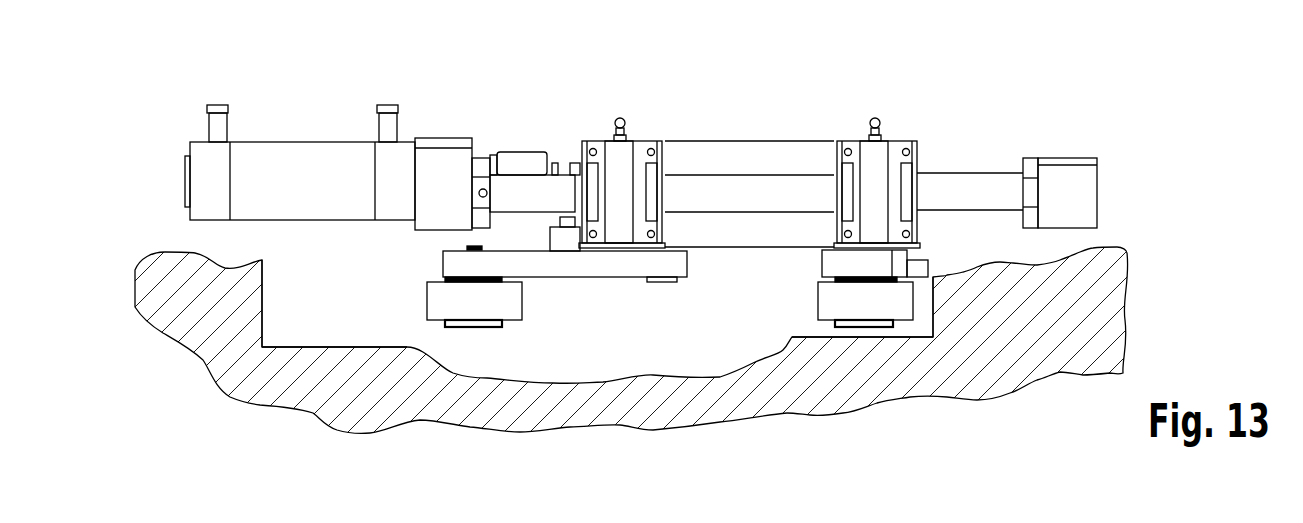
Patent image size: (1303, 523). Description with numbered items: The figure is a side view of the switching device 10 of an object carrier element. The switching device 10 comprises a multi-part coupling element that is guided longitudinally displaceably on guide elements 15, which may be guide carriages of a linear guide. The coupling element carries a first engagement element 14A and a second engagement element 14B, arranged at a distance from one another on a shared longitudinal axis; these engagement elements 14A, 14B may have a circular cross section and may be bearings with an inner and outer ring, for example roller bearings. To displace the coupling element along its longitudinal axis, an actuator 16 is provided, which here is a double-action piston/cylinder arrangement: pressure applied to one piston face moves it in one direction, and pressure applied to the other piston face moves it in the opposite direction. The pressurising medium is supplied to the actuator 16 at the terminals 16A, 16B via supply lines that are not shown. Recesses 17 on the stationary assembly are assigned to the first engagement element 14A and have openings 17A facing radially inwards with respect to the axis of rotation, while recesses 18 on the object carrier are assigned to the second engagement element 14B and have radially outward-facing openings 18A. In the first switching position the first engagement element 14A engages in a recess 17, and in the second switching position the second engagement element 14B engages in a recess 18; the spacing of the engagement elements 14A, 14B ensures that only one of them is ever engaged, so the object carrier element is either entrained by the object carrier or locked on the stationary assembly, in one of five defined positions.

The switching device 10 is at (716, 108).
The first engagement element 14A is at (505, 298).
The second engagement element 14B is at (837, 300).
The guide elements 15 is at (973, 190).
The actuator 16 is at (323, 177).
The terminal 16A is at (220, 127).
The terminal 16B is at (390, 127).
The recesses 17 is at (280, 331).
The openings 17A is at (341, 309).
The recesses 18 is at (931, 337).
The openings 18A is at (803, 323).